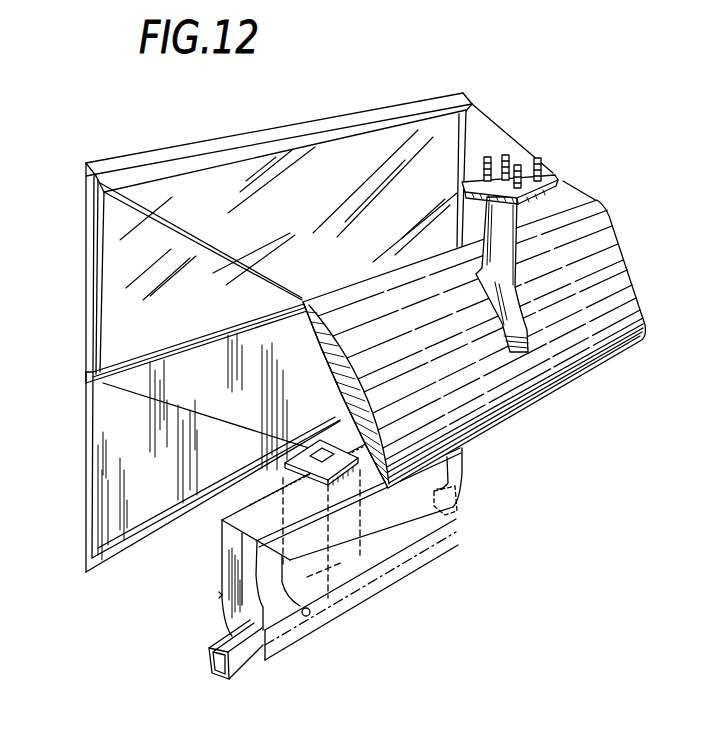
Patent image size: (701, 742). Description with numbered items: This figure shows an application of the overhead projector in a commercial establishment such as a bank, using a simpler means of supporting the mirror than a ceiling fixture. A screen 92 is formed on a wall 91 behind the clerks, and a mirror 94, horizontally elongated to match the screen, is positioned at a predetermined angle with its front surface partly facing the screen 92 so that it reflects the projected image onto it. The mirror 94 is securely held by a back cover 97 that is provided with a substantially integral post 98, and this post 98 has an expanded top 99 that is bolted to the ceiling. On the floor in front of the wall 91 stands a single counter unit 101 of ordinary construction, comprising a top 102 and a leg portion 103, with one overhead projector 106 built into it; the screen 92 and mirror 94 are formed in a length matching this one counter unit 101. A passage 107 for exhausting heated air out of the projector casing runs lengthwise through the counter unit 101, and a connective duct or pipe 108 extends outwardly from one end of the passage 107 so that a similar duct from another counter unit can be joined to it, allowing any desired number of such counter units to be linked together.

The wall 91 is at (314, 319).
The screen 92 is at (279, 129).
The mirror 94 is at (340, 387).
The back cover 97 is at (459, 344).
The post 98 is at (524, 274).
The expanded top 99 is at (542, 176).
The counter unit 101 is at (315, 568).
The top 102 is at (316, 504).
The leg portion 103 is at (220, 595).
The overhead projector 106 is at (281, 462).
The passage 107 is at (313, 618).
The connective duct or pipe 108 is at (240, 660).